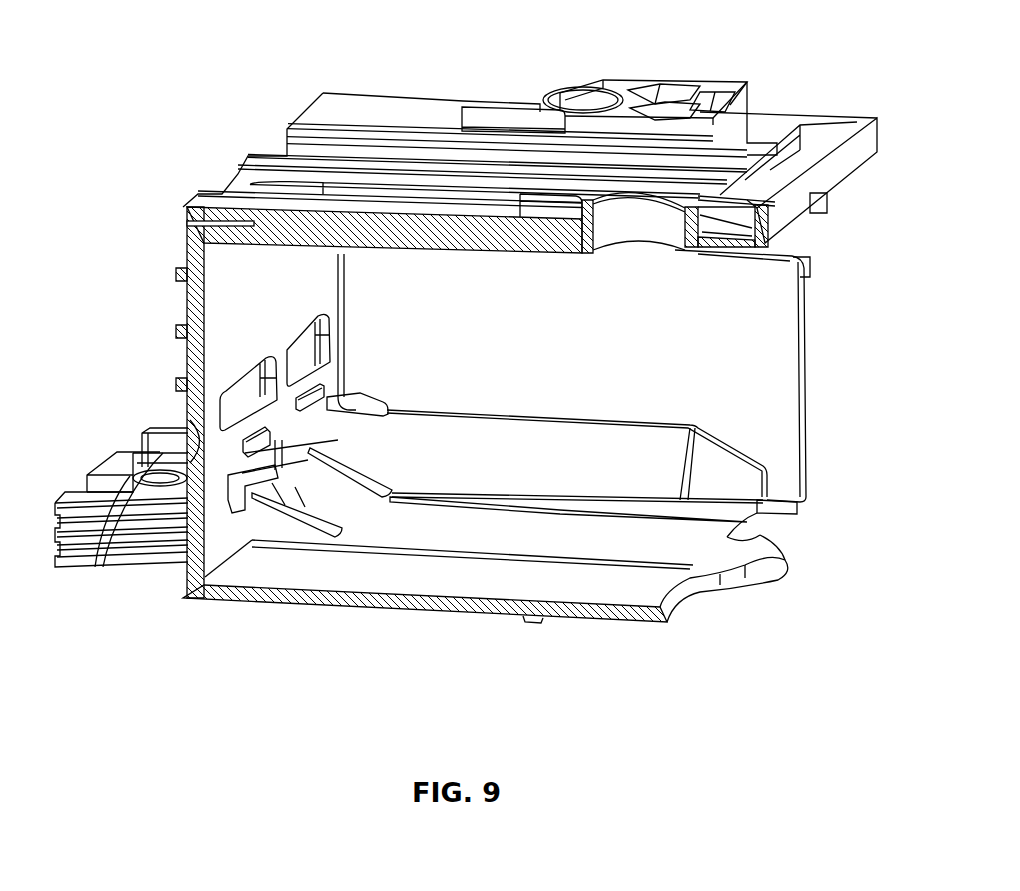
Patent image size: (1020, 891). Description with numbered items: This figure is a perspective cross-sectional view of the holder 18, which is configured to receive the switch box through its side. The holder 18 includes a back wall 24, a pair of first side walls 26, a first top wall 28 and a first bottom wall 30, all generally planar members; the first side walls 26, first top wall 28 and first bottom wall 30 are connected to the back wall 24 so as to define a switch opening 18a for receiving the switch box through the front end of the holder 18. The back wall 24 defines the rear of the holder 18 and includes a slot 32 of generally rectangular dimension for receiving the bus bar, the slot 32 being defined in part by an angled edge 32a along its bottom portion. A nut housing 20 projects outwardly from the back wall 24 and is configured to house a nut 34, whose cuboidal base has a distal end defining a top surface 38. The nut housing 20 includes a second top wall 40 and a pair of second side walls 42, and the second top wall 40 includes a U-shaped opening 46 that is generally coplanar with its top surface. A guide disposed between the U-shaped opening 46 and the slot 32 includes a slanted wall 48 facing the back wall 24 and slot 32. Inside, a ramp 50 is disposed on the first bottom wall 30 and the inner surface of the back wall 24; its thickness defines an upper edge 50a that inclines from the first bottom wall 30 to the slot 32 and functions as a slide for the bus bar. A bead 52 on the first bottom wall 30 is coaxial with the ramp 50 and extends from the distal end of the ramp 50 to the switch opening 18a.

The holder 18 is at (662, 30).
The switch opening 18a is at (815, 375).
The nut housing 20 is at (57, 566).
The back wall 24 is at (215, 300).
The first side walls 26 is at (778, 302).
The first top wall 28 is at (735, 137).
The first bottom wall 30 is at (668, 620).
The slot 32 is at (353, 407).
The angled edge 32a is at (380, 410).
The nut 34 is at (145, 505).
The top surface 38 is at (160, 470).
The second top wall 40 is at (128, 453).
The second side walls 42 is at (130, 530).
The U-shaped opening 46 is at (128, 478).
The slanted wall 48 is at (327, 400).
The ramp 50 is at (355, 495).
The upper edge 50a is at (355, 470).
The bead 52 is at (498, 546).